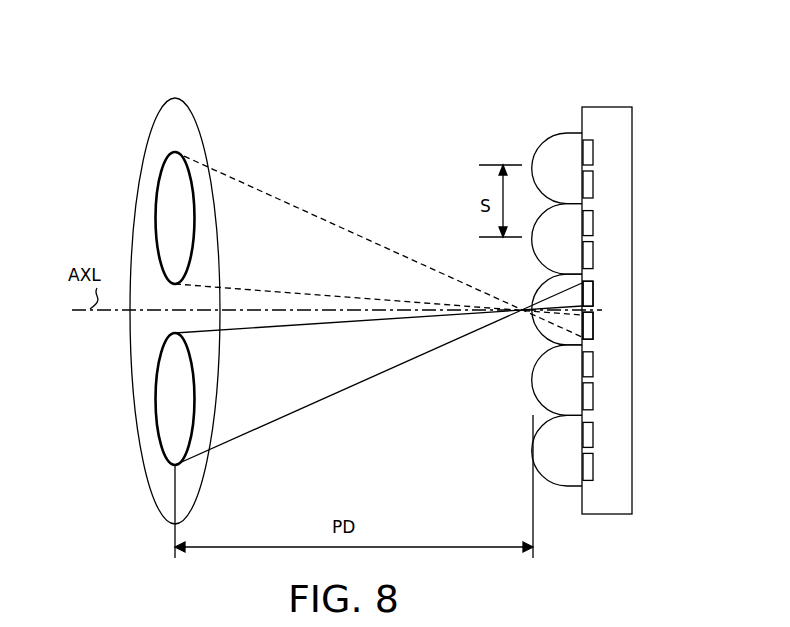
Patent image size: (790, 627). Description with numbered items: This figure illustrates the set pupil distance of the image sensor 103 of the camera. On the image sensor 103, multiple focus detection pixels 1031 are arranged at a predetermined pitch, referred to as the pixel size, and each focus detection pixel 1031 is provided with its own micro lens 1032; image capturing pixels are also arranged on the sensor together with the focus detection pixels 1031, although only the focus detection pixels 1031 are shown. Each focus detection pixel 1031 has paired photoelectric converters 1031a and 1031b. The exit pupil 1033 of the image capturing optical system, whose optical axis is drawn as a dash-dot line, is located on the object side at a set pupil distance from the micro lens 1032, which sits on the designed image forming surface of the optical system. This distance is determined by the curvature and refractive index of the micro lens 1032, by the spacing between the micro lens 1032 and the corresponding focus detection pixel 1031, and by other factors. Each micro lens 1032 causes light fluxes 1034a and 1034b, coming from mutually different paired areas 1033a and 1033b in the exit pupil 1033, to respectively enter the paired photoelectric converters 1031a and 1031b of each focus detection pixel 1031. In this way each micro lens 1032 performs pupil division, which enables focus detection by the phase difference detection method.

The image sensor 103 is at (609, 515).
The focus detection pixel 1031 is at (601, 231).
The photoelectric converter 1031a is at (596, 294).
The photoelectric converter 1031b is at (596, 326).
The micro lens 1032 is at (537, 401).
The exit pupil 1033 is at (192, 108).
The paired area 1033a is at (155, 403).
The paired area 1033b is at (155, 221).
The light flux 1034a is at (281, 399).
The light flux 1034b is at (255, 210).